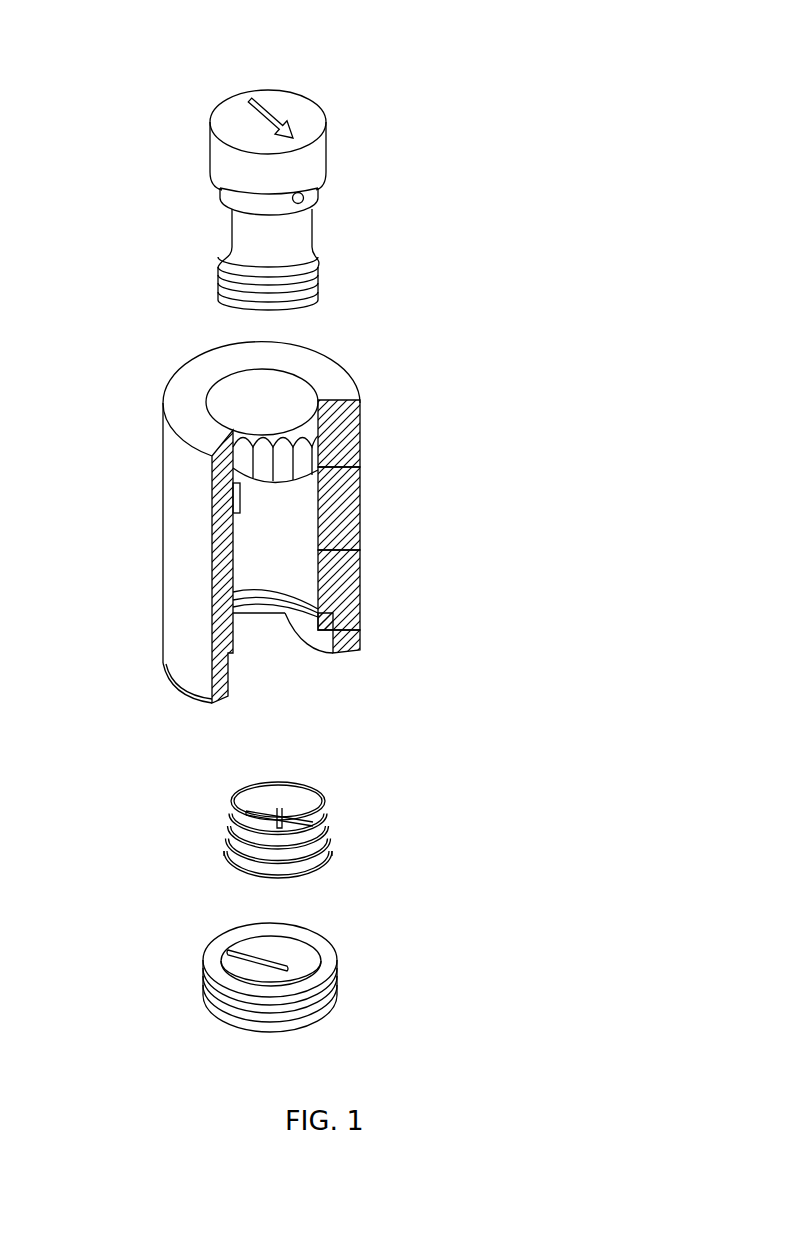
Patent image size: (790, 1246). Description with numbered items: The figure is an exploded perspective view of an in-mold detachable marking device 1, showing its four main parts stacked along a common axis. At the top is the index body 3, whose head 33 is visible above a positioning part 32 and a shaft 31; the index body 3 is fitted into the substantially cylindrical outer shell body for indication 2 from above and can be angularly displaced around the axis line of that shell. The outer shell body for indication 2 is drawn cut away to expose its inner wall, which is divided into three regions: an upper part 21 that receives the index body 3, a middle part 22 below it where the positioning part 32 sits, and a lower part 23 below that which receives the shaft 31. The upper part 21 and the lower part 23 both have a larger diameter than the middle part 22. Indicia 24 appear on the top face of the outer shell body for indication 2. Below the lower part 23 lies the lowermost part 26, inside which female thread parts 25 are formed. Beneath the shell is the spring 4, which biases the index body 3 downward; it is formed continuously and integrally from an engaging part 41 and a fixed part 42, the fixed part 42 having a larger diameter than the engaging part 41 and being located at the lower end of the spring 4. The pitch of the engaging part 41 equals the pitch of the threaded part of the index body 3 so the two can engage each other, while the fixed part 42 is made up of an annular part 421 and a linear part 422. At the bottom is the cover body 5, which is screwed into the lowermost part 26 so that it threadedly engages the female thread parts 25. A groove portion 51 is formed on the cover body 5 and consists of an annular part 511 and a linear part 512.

The marking device 1 is at (343, 50).
The outer shell body for indication 2 is at (212, 490).
The upper part 21 is at (320, 412).
The middle part 22 is at (320, 470).
The lower part 23 is at (320, 548).
The number indicia 24 is at (173, 390).
The female thread parts 25 is at (333, 657).
The lowermost part 26 is at (357, 630).
The index body 3 is at (326, 178).
The shaft 31 is at (224, 283).
The positioning part 32 is at (226, 195).
The head 33 is at (220, 165).
The spring 4 is at (567, 737).
The engaging part 41 is at (325, 800).
The fixed part 42 is at (492, 782).
The annular part 421 is at (327, 858).
The linear part 422 is at (322, 820).
The cover body 5 is at (332, 1003).
The groove portion 51 is at (492, 898).
The annular part 511 is at (305, 952).
The linear part 512 is at (290, 968).